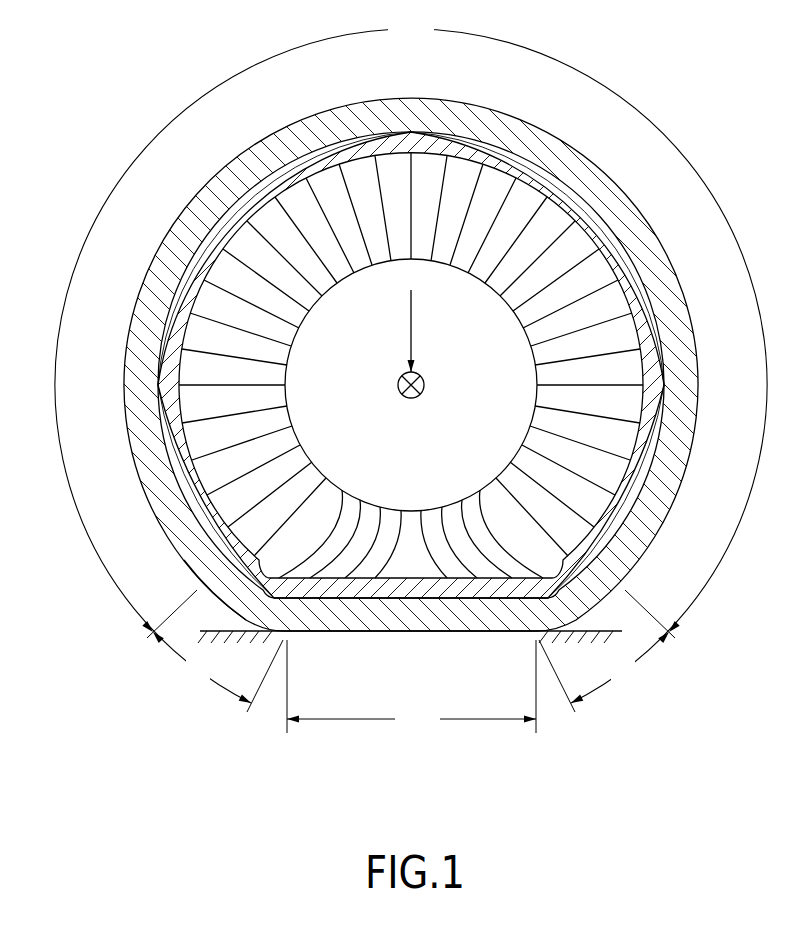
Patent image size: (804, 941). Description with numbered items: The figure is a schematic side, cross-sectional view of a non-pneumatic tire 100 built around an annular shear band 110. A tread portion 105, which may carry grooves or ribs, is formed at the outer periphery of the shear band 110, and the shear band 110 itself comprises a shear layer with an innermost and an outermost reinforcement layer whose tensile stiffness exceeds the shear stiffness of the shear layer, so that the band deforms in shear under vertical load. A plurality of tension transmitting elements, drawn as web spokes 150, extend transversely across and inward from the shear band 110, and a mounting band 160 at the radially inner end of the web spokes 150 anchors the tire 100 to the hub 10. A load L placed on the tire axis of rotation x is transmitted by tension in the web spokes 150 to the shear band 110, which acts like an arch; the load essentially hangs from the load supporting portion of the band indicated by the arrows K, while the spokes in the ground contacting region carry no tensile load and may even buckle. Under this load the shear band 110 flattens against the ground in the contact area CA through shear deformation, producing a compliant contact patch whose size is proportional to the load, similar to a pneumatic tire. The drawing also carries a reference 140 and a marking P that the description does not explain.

The non-pneumatic tire 100 is at (409, 470).
The tread portion 105 is at (316, 134).
The shear band 110 is at (393, 142).
The ground contacting tread portion 140 is at (183, 568).
The web spokes 150 is at (238, 300).
The mounting band 160 is at (284, 384).
The hub 10 is at (411, 385).
The arrows indicating load supporting portion of band K is at (411, 356).
The load L is at (412, 308).
The tire axis of rotation x is at (424, 387).
The shoulder distance P is at (410, 651).
The contact area CA is at (411, 689).